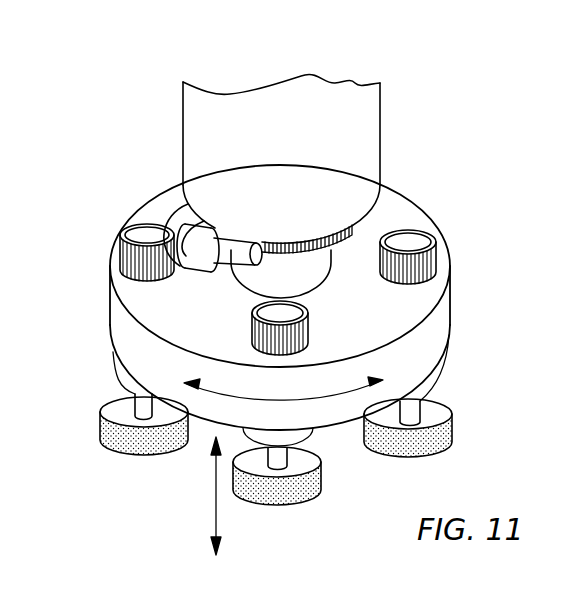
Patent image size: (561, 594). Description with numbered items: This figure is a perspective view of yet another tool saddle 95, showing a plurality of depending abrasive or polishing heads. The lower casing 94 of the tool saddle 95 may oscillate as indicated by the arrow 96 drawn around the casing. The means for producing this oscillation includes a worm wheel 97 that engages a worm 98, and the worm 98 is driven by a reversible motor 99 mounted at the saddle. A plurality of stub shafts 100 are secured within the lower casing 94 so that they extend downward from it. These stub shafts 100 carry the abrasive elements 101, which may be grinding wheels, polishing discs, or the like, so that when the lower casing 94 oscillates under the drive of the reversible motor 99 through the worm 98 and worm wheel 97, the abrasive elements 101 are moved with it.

The lower casing 94 is at (440, 320).
The tool saddle 95 is at (392, 150).
The arrow 96 is at (348, 395).
The worm wheel 97 is at (375, 237).
The worm 98 is at (238, 250).
The reversible motor 99 is at (185, 226).
The stub shafts 100 is at (143, 406).
The abrasive elements 101 is at (110, 445).